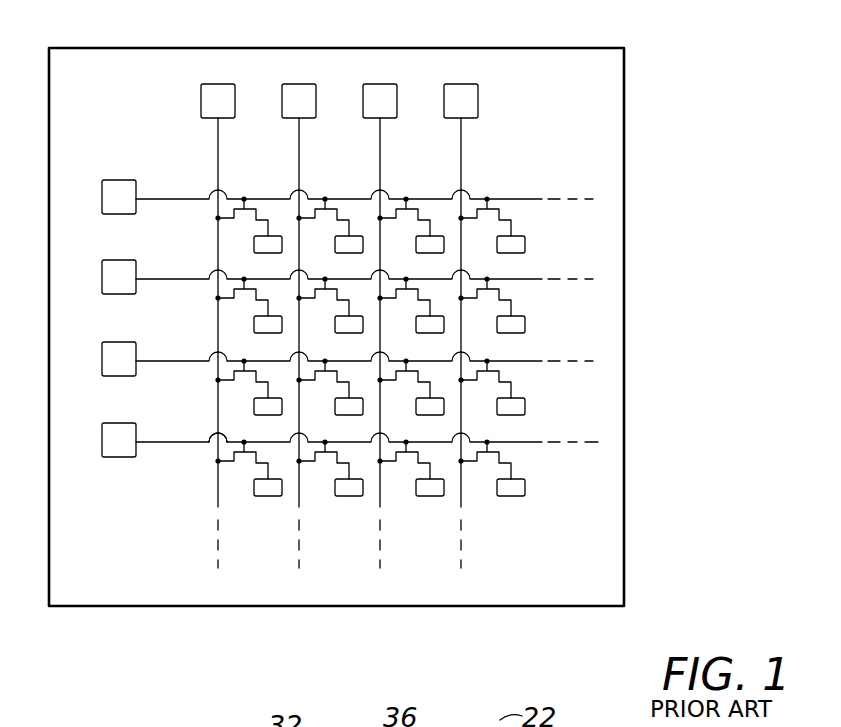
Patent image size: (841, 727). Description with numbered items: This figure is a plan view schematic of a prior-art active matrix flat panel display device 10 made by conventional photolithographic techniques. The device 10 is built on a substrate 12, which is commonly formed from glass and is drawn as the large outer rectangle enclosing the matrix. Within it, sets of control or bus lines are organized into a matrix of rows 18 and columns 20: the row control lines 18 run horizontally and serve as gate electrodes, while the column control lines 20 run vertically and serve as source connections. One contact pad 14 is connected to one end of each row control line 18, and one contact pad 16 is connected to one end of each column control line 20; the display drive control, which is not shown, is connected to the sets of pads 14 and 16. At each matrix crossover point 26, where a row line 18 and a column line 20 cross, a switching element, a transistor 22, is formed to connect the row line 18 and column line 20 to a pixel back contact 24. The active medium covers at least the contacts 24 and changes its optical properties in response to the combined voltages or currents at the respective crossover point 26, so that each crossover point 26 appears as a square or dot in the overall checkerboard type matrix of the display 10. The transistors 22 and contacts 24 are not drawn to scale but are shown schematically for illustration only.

The active matrix flat panel display device 10 is at (648, 410).
The substrate 12 is at (568, 563).
The contact pads 14 is at (102, 440).
The contact pads 16 is at (443, 105).
The row control lines 18 is at (157, 277).
The column control lines 20 is at (298, 160).
The transistor 22 is at (472, 305).
The pixel back contacts 24 is at (527, 245).
The crossover point 26 is at (208, 445).